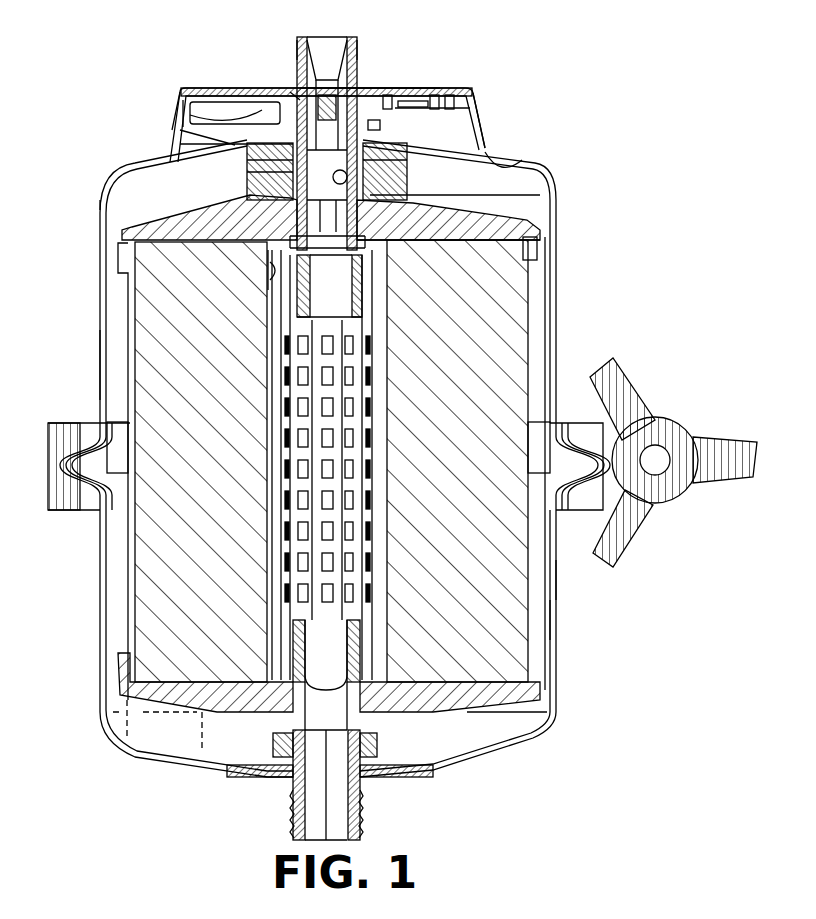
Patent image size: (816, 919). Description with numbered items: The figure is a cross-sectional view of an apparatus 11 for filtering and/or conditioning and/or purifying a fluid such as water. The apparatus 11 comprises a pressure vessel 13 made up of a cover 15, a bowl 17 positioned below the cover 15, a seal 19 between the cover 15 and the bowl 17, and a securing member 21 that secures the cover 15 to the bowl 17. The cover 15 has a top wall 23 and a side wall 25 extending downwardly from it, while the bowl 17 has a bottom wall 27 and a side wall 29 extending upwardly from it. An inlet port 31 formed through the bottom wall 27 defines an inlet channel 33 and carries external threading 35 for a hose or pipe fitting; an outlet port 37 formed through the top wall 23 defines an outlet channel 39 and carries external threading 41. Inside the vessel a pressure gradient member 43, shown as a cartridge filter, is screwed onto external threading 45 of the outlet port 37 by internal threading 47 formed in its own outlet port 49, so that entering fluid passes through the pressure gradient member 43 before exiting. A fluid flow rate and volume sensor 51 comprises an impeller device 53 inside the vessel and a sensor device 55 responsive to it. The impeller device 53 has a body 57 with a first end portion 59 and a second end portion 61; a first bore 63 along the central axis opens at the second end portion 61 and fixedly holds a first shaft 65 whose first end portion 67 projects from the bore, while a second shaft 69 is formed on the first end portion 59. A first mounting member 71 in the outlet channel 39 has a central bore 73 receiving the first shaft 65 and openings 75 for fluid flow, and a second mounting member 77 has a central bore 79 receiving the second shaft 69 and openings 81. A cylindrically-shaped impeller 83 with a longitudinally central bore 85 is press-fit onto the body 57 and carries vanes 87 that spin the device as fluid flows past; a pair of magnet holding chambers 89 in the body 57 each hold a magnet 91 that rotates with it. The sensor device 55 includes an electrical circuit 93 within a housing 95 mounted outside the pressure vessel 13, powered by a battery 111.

The apparatus 11 is at (600, 197).
The pressure vessel 13 is at (558, 333).
The cover 15 is at (556, 282).
The bowl 17 is at (557, 613).
The seal 19 is at (543, 490).
The securing member 21 is at (600, 425).
The top wall 23 is at (533, 153).
The side wall 25 is at (100, 362).
The bottom wall 27 is at (403, 775).
The side wall 29 is at (556, 585).
The inlet port 31 is at (293, 787).
The inlet channel 33 is at (333, 830).
The external threading 35 is at (353, 810).
The outlet port 37 is at (400, 243).
The outlet channel 39 is at (333, 55).
The external threading 41 is at (357, 50).
The pressure gradient member 43 is at (173, 610).
The external threading 45 is at (327, 239).
The internal threading 47 is at (275, 300).
The outlet port 49 is at (330, 265).
The fluid flow rate and volume sensor 51 is at (447, 62).
The impeller device 53 is at (200, 142).
The sensor device 55 is at (477, 90).
The body 57 is at (380, 127).
The first end portion 59 is at (297, 67).
The second end portion 61 is at (176, 160).
The first bore 63 is at (247, 168).
The first shaft 65 is at (410, 157).
The first end portion 67 is at (333, 216).
The second shaft 69 is at (357, 65).
The first mounting member 71 is at (440, 193).
The central bore 73 is at (268, 258).
The openings 75 is at (390, 228).
The second mounting member 77 is at (300, 42).
The central bore 79 is at (355, 82).
The openings 81 is at (302, 75).
The impeller 83 is at (400, 180).
The longitudinally central bore 85 is at (247, 187).
The vanes 87 is at (172, 143).
The magnet holding chambers 89 is at (293, 90).
The magnet 91 is at (182, 108).
The electrical circuit 93 is at (480, 122).
The housing 95 is at (180, 115).
The battery 111 is at (200, 112).